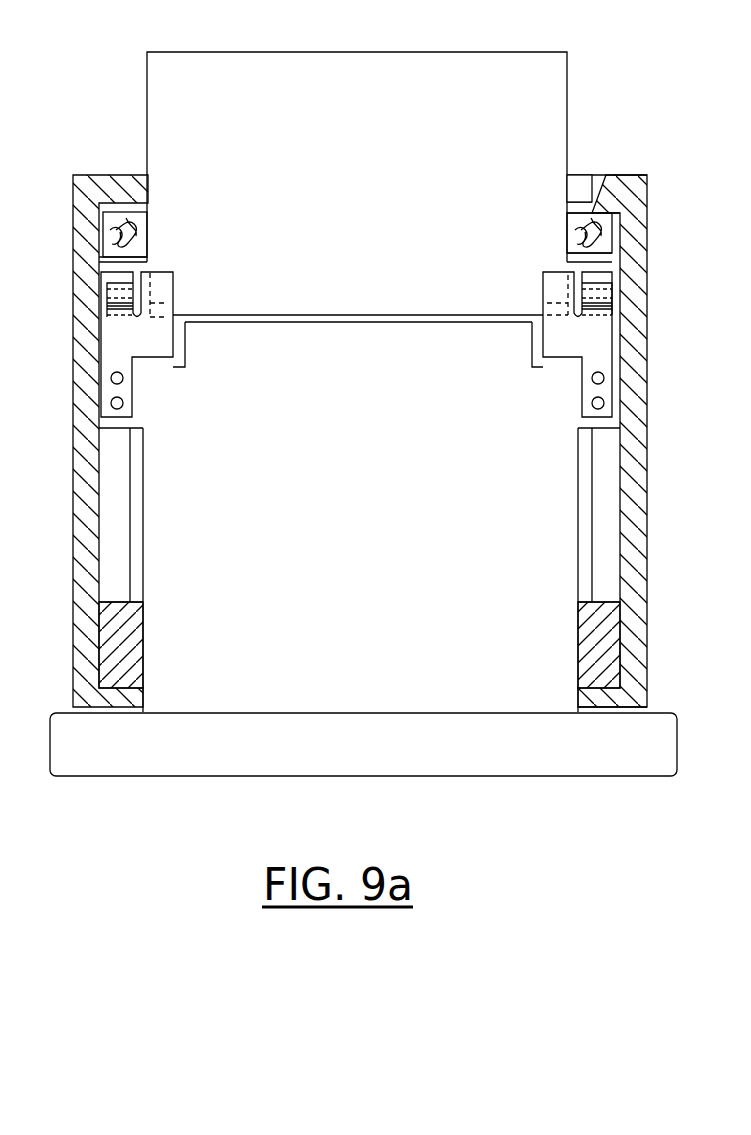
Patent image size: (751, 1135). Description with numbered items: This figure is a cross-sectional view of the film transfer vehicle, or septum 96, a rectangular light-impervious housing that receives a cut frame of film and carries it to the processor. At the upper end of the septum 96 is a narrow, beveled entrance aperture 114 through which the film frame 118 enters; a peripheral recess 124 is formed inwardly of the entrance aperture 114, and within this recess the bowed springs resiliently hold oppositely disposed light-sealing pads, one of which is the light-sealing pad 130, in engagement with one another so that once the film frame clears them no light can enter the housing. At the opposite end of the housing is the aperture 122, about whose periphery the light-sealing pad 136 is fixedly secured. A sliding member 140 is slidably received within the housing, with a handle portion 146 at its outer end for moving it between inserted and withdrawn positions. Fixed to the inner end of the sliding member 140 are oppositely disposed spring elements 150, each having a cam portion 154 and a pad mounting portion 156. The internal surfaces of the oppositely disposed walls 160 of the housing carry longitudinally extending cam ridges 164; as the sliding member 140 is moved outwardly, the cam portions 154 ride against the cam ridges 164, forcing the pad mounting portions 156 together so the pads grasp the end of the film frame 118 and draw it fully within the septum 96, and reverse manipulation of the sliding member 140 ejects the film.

The septum 96 is at (663, 553).
The entrance aperture 114 is at (575, 203).
The film frame 118 is at (338, 134).
The aperture 122 is at (583, 712).
The peripheral recess 124 is at (612, 258).
The light-sealing pad 130 is at (612, 207).
The light-sealing pad 136 is at (135, 663).
The sliding member 140 is at (356, 499).
The handle portion 146 is at (665, 758).
The spring element 150 is at (162, 348).
The cam portion 154 is at (124, 292).
The pad mounting portion 156 is at (160, 296).
The wall 160 is at (647, 242).
The cam ridge 164 is at (112, 543).